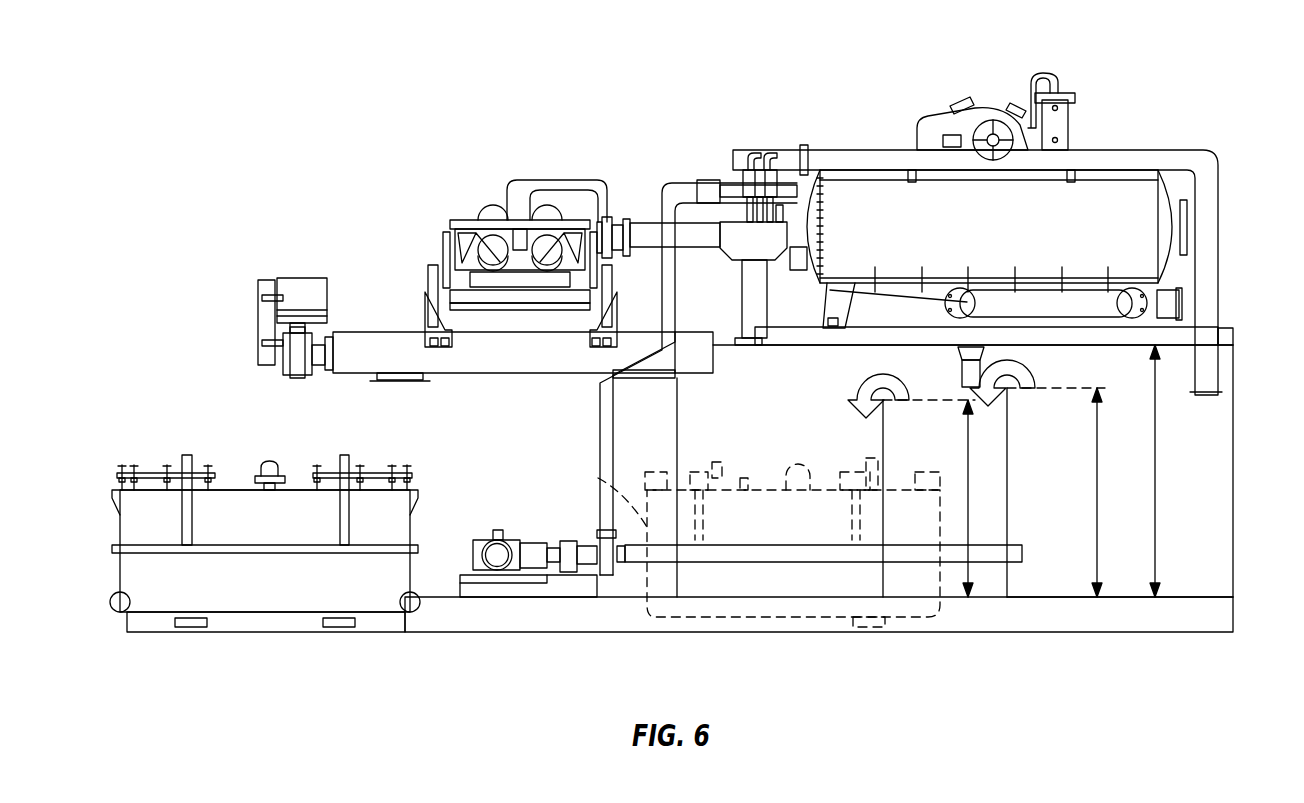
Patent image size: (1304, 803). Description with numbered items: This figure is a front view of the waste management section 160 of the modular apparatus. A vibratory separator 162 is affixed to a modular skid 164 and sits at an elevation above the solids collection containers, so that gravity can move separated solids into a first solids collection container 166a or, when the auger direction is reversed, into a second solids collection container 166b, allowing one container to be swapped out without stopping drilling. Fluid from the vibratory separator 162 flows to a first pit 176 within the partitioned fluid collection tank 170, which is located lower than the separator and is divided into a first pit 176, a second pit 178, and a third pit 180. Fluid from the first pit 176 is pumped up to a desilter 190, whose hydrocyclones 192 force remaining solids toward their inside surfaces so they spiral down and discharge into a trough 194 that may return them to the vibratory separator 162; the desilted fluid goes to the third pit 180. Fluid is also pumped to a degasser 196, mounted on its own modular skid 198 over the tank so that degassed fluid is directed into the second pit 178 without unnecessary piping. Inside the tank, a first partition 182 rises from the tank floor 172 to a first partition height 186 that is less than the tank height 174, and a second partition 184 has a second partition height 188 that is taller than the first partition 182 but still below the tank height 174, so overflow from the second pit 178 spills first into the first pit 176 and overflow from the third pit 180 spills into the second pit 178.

The waste management section 160 is at (152, 72).
The vibratory separator 162 is at (462, 220).
The modular skid 164 is at (520, 333).
The first solids collection container 166a is at (598, 477).
The second solids collection container 166b is at (238, 490).
The fluid collection tank 170 is at (1210, 510).
The tank floor 172 is at (1200, 597).
The tank height 174 is at (1156, 471).
The first pit 176 is at (712, 432).
The second pit 178 is at (897, 456).
The third pit 180 is at (1123, 570).
The first partition 182 is at (885, 443).
The second partition 184 is at (1010, 437).
The first partition height 186 is at (971, 498).
The second partition height 188 is at (1098, 492).
The desilter 190 is at (792, 150).
The hydrocyclones 192 is at (748, 193).
The trough 194 is at (738, 233).
The degasser 196 is at (1075, 210).
The modular skid 198 is at (1173, 343).